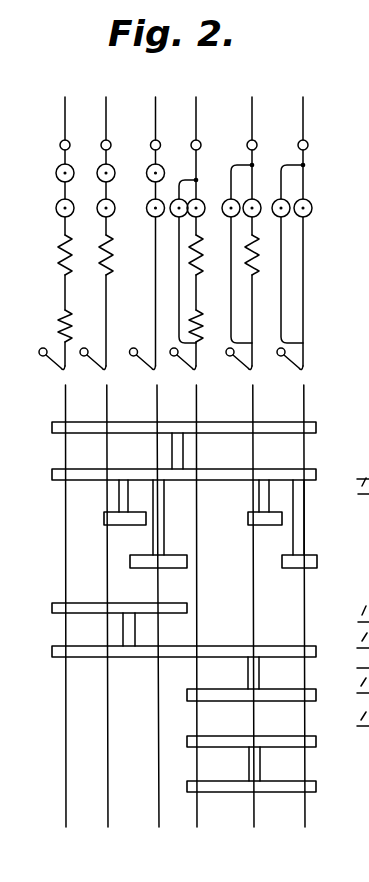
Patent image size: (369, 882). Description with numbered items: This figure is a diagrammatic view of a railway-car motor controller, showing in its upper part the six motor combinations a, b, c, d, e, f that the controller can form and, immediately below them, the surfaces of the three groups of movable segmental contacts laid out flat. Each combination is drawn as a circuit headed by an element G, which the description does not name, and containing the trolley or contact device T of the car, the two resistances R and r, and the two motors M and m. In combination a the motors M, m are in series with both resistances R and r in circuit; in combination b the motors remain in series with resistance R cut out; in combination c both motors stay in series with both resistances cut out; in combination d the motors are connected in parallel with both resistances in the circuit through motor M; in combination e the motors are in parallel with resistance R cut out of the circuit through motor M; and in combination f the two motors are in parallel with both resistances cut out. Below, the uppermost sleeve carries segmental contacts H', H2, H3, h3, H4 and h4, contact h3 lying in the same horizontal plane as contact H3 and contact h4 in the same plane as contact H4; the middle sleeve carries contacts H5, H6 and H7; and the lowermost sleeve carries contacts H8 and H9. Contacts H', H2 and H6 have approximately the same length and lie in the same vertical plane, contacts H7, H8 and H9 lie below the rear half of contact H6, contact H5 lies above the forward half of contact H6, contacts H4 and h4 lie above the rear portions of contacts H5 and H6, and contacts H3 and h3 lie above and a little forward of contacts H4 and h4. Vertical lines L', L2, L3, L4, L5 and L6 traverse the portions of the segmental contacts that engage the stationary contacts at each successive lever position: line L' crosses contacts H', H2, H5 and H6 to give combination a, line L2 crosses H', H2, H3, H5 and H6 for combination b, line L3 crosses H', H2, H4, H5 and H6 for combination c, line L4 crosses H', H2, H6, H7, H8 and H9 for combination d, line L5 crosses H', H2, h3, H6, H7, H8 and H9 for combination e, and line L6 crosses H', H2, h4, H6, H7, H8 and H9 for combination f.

The generator G is at (185, 116).
The motor m is at (55, 173).
The motor M is at (56, 211).
The motor combination a is at (47, 231).
The motor combination b is at (95, 231).
The motor combination c is at (146, 231).
The motor combination d is at (188, 231).
The motor combination e is at (242, 231).
The motor combination f is at (293, 231).
The resistance r is at (150, 260).
The resistance R is at (56, 326).
The trolley or contact device T is at (166, 363).
The line L' is at (55, 605).
The line L2 is at (97, 603).
The line L3 is at (147, 600).
The line L4 is at (188, 603).
The line L5 is at (243, 602).
The line L6 is at (294, 603).
The segmental contact H' is at (184, 416).
The segmental contact H2 is at (184, 456).
The segmental contact H3 is at (102, 517).
The segmental contact H4 is at (134, 548).
The segmental contact H5 is at (84, 610).
The segmental contact H6 is at (211, 652).
The segmental contact H7 is at (211, 697).
The segmental contact H8 is at (211, 742).
The segmental contact H9 is at (211, 786).
The segmental contact h3 is at (248, 517).
The segmental contact h4 is at (292, 569).